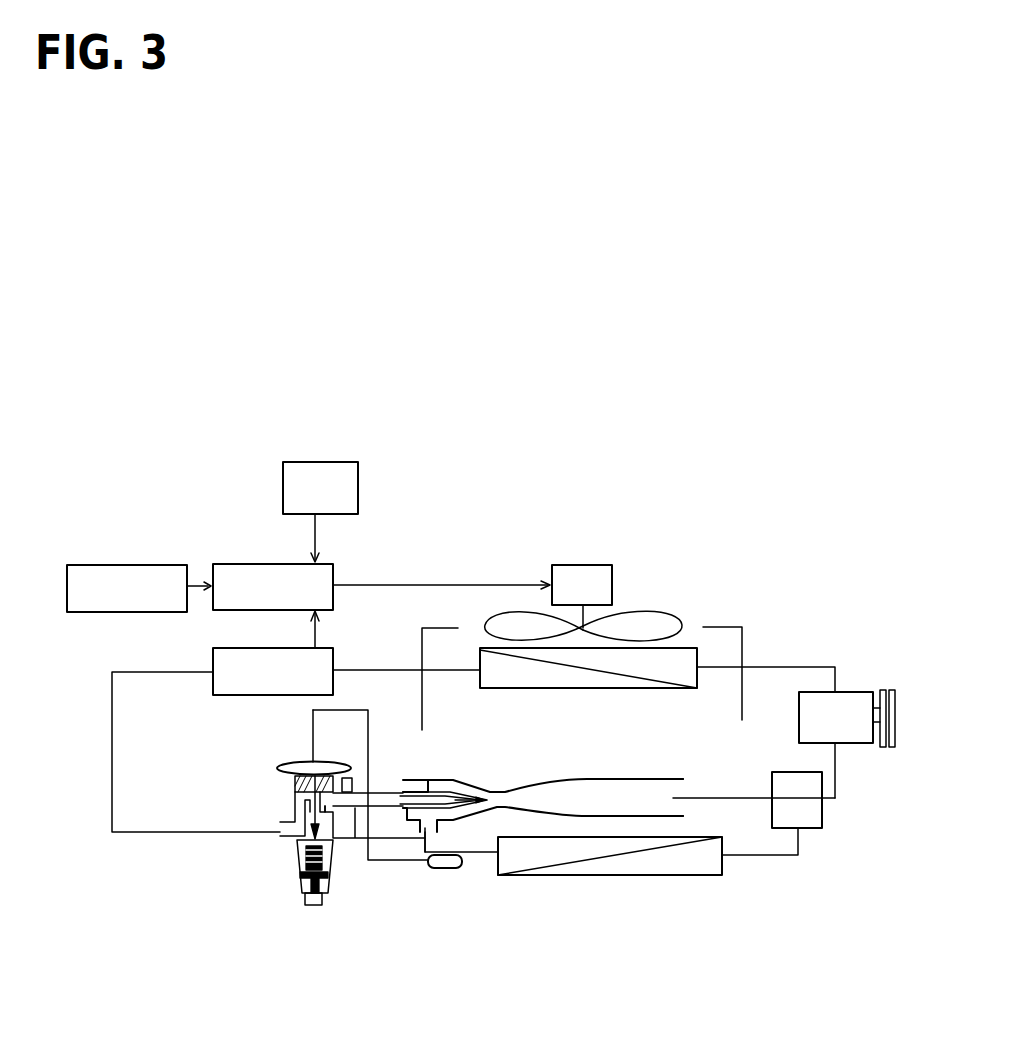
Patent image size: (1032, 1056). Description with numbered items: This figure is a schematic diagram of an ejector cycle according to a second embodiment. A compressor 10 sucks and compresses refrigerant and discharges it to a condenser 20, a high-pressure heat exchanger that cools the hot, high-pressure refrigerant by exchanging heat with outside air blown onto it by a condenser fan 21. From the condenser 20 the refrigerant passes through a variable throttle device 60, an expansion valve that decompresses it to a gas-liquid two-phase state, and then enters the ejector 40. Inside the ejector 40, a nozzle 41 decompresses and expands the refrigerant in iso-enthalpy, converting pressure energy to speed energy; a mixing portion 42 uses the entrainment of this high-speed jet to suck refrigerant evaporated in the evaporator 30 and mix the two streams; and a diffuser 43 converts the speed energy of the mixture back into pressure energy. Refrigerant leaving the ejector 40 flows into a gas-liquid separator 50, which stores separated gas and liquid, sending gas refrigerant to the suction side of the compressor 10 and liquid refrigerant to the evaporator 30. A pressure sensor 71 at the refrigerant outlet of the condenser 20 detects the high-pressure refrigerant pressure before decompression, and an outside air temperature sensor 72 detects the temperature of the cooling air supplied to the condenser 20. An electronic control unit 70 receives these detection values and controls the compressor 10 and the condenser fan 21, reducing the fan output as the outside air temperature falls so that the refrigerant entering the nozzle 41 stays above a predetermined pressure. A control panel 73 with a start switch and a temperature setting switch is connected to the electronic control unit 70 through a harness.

The compressor 10 is at (853, 692).
The condenser 20 is at (678, 688).
The condenser fan 21 is at (655, 612).
The evaporator 30 is at (677, 834).
The ejector 40 is at (541, 787).
The nozzle 41 is at (427, 781).
The mixing portion 42 is at (505, 810).
The diffuser 43 is at (552, 798).
The gas-liquid separator 50 is at (822, 815).
The variable throttle device 60 is at (293, 763).
The electronic control unit 70 is at (333, 572).
The pressure sensor 71 is at (333, 655).
The outside air temperature sensor 72 is at (148, 565).
The control panel 73 is at (358, 490).